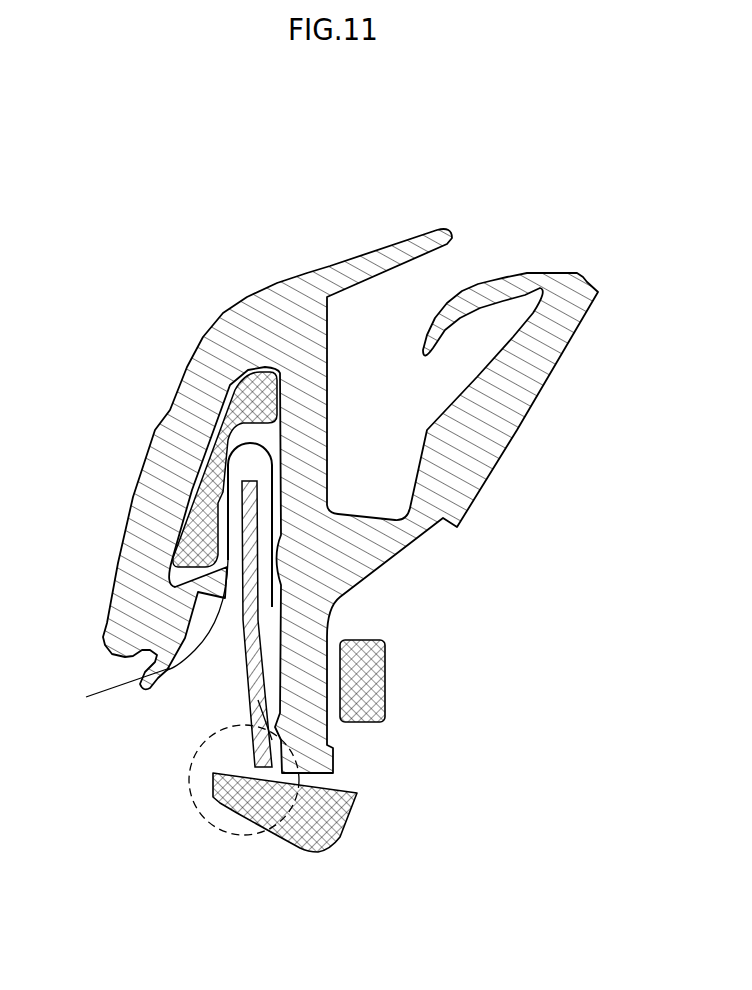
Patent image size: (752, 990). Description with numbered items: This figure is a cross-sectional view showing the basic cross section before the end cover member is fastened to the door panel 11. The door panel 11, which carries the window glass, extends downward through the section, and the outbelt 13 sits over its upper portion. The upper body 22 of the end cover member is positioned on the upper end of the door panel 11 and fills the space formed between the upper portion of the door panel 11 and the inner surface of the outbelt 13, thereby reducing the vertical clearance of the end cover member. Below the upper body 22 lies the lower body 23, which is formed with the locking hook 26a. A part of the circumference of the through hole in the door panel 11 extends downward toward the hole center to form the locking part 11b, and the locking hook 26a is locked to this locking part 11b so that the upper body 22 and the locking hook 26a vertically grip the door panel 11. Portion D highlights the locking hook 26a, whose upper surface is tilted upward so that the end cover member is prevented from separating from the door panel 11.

The outbelt 13 is at (272, 301).
The upper body 22 is at (197, 510).
The door panel 11 is at (238, 665).
The locking part 11b is at (263, 702).
The lower body 23 is at (367, 678).
The locking hook 26a is at (297, 820).
The portion D is at (244, 790).